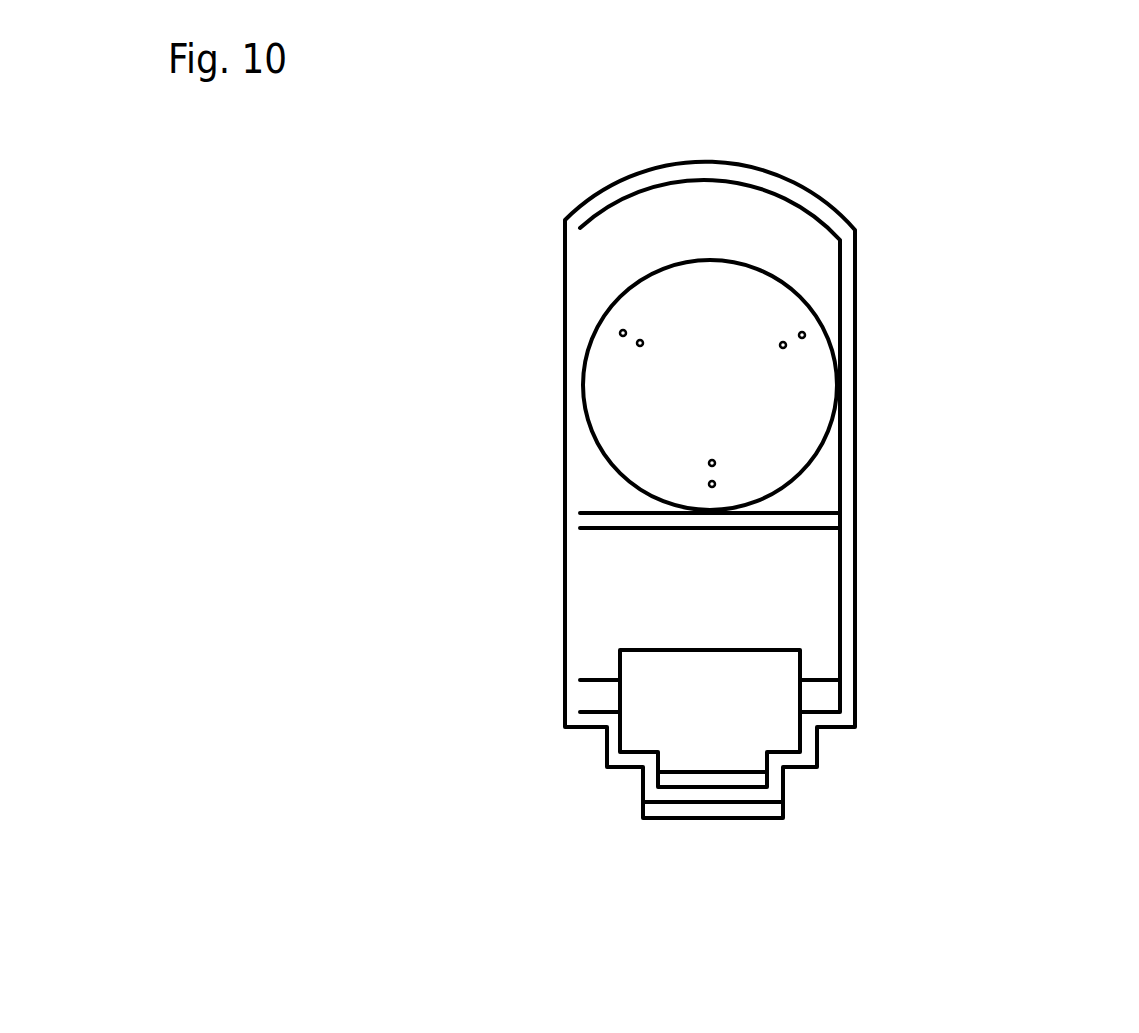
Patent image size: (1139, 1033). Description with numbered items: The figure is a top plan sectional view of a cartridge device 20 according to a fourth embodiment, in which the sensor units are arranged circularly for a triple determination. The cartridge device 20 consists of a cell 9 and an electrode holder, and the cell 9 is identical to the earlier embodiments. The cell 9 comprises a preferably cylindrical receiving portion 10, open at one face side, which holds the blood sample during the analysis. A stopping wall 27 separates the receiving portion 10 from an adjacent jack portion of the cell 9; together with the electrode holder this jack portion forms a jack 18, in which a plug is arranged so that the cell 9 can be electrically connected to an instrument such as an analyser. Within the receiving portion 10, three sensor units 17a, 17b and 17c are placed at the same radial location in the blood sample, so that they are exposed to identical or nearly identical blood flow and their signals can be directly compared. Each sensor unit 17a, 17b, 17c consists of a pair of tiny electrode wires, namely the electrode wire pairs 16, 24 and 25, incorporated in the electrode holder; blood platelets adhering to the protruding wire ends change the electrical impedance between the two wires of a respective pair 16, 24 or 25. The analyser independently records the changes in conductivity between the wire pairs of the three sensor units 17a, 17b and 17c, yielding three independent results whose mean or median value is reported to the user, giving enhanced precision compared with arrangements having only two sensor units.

The cell 9 is at (708, 148).
The receiving portion 10 is at (728, 312).
The electrode wire pair 16 is at (782, 332).
The sensor unit 17a is at (800, 347).
The sensor unit 17b is at (627, 346).
The sensor unit 17c is at (698, 478).
The jack 18 is at (673, 715).
The cartridge device 20 is at (892, 643).
The electrode wire pair 24 is at (637, 333).
The electrode wire pair 25 is at (698, 463).
The stopping wall 27 is at (820, 522).